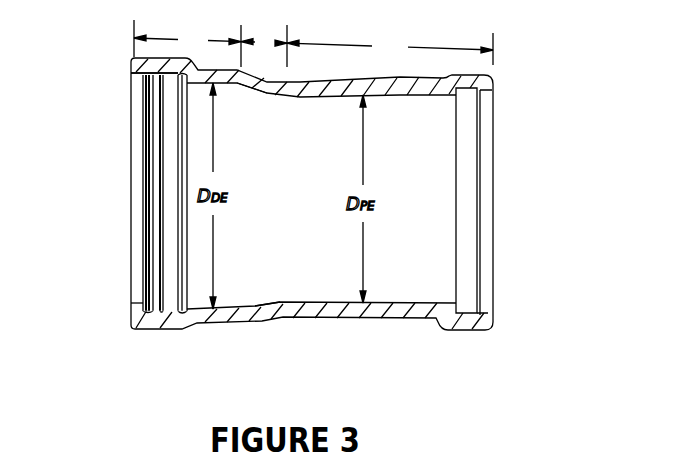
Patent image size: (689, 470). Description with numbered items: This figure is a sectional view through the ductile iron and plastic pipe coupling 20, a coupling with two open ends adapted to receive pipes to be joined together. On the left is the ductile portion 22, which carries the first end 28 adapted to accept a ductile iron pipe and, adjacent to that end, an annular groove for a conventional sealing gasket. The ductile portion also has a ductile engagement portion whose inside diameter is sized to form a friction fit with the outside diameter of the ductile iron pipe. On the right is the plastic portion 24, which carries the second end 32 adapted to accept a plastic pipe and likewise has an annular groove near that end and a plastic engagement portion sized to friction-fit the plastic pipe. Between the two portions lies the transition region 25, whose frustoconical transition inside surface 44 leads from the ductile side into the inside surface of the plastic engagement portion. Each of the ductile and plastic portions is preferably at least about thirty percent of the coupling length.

The ductile iron and plastic pipe coupling 20 is at (280, 353).
The ductile portion 22 is at (187, 43).
The plastic portion 24 is at (390, 49).
The transition portion 25 is at (264, 46).
The first end 28 is at (115, 205).
The second end 32 is at (507, 180).
The frustoconical transition inside surface 44 is at (257, 92).